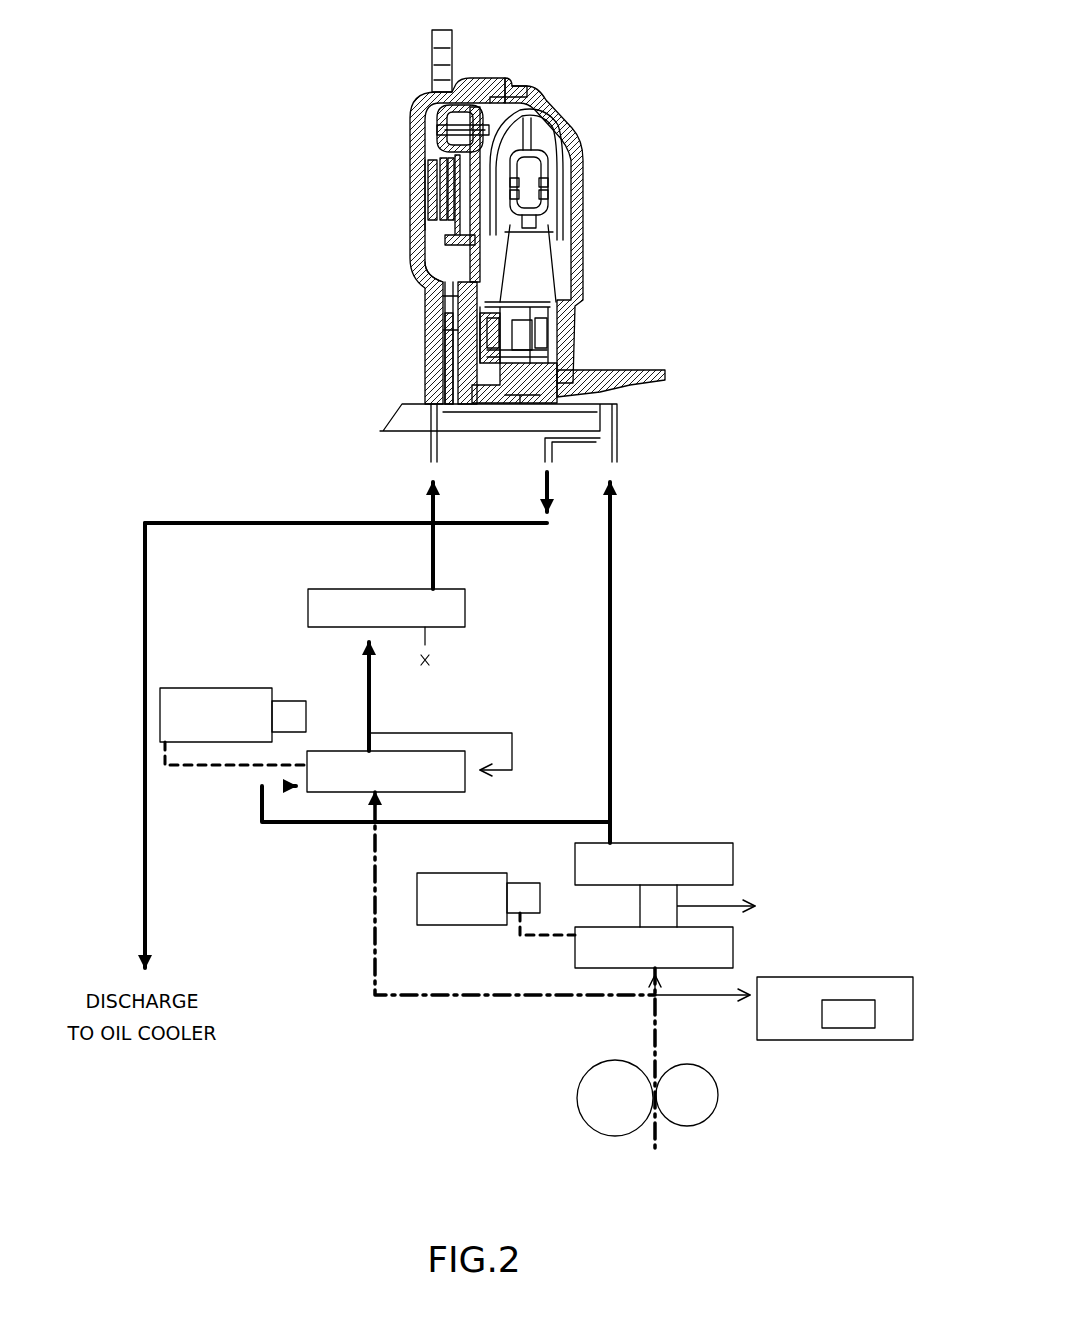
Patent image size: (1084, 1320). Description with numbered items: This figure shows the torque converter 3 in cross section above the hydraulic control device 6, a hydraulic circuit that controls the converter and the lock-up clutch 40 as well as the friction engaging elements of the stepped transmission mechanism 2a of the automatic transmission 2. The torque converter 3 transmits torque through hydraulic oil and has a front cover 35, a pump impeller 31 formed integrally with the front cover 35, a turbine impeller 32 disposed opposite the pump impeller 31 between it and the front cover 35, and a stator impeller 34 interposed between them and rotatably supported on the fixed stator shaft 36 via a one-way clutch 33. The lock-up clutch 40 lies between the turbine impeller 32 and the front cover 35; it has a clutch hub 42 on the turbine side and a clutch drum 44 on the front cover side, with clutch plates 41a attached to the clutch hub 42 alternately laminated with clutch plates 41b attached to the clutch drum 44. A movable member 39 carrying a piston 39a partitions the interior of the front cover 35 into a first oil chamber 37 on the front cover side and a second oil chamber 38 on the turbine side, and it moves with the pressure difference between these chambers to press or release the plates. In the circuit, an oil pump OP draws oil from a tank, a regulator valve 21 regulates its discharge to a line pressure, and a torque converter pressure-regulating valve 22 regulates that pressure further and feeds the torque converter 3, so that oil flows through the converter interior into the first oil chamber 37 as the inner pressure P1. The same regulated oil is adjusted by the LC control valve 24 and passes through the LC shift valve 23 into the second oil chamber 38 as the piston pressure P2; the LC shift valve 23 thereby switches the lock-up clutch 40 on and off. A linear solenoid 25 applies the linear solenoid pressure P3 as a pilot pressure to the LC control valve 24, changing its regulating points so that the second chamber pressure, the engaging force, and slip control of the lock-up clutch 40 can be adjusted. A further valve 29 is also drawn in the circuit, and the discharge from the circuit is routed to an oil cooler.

The automatic transmission 2 is at (835, 1021).
The stepped transmission mechanism 2a is at (853, 999).
The torque converter 3 is at (583, 113).
The hydraulic control device 6 is at (668, 678).
The regulator valve 21 is at (735, 946).
The torque converter pressure-regulating valve 22 is at (735, 862).
The LC shift valve 23 is at (306, 603).
The LC control valve 24 is at (338, 748).
The linear solenoid 25 is at (200, 687).
The valve 29 is at (463, 930).
The pump impeller 31 is at (558, 185).
The turbine impeller 32 is at (508, 118).
The one-way clutch 33 is at (518, 338).
The stator impeller 34 is at (533, 240).
The front cover 35 is at (412, 169).
The stator shaft 36 is at (555, 377).
The first oil chamber 37 is at (437, 316).
The second oil chamber 38 is at (458, 338).
The movable member 39 is at (445, 274).
The piston 39a is at (415, 202).
The lock-up clutch 40 is at (433, 153).
The clutch plates 41a is at (430, 218).
The clutch plates 41b is at (437, 233).
The clutch hub 42 is at (427, 247).
The clutch drum 44 is at (412, 152).
The inner pressure P1 is at (614, 562).
The piston pressure P2 is at (435, 555).
The linear solenoid pressure P3 is at (222, 770).
The oil pump OP is at (726, 1092).